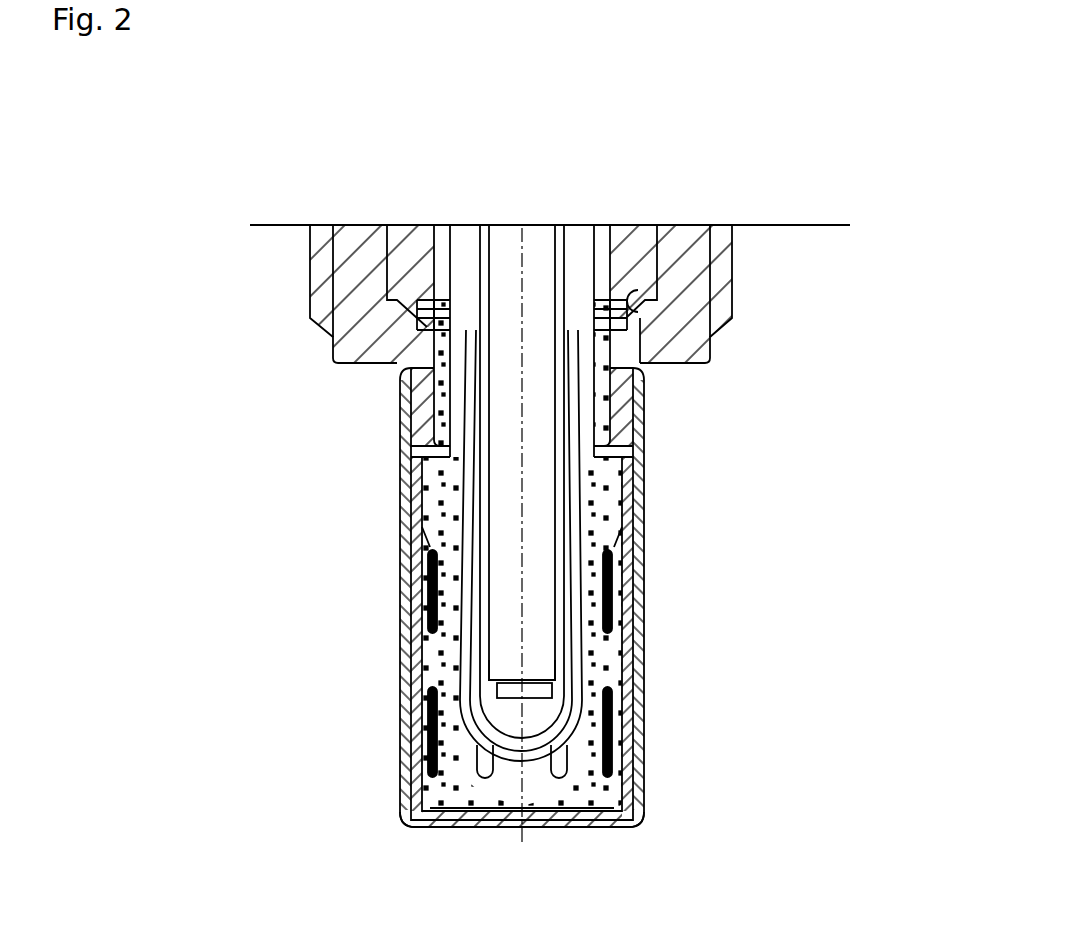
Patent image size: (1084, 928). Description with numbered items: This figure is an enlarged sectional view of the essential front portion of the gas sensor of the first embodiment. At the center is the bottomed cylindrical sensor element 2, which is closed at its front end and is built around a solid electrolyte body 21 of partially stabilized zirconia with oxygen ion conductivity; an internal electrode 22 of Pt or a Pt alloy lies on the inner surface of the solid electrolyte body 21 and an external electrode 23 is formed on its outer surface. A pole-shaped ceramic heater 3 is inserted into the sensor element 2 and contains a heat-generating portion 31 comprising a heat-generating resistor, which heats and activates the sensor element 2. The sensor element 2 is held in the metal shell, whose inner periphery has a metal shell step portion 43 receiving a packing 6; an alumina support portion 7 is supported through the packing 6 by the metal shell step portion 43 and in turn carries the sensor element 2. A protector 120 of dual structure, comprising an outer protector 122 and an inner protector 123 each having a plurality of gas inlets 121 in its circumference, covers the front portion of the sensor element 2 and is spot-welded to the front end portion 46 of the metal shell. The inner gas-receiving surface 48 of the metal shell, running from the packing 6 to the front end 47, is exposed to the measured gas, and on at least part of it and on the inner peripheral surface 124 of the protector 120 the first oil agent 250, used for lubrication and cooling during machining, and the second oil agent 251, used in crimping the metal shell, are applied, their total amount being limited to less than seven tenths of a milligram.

The sensor element 2 is at (640, 597).
The solid electrolyte body 21 is at (567, 537).
The ceramic heater 3 is at (515, 427).
The heat-generating portion 31 is at (515, 637).
The packing 6 is at (420, 298).
The alumina support portion 7 is at (407, 258).
The internal electrode 22 is at (555, 613).
The external electrode 23 is at (500, 682).
The metal shell step portion 43 is at (655, 288).
The front end portion of the metal shell 46 is at (405, 386).
The front end of the metal shell 47 is at (615, 490).
The inner gas-receiving surface 48 is at (612, 400).
The protector 120 is at (400, 813).
The gas inlets 121 is at (417, 777).
The outer protector 122 is at (415, 535).
The inner protector 123 is at (430, 615).
The inner peripheral surface of the protector 124 is at (623, 823).
The first oil agent 250 is at (432, 502).
The second oil agent 251 is at (432, 300).